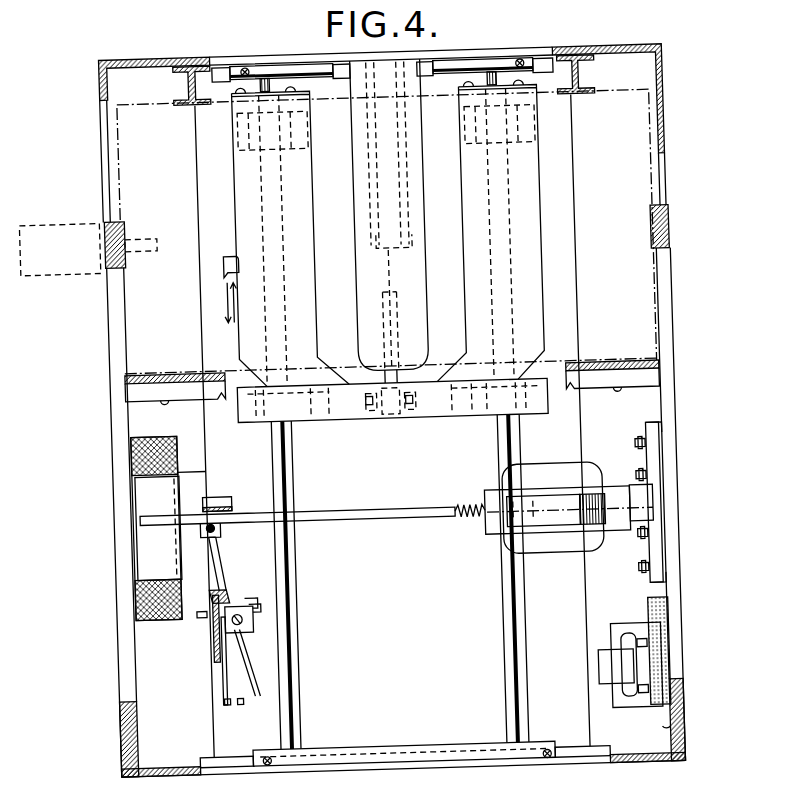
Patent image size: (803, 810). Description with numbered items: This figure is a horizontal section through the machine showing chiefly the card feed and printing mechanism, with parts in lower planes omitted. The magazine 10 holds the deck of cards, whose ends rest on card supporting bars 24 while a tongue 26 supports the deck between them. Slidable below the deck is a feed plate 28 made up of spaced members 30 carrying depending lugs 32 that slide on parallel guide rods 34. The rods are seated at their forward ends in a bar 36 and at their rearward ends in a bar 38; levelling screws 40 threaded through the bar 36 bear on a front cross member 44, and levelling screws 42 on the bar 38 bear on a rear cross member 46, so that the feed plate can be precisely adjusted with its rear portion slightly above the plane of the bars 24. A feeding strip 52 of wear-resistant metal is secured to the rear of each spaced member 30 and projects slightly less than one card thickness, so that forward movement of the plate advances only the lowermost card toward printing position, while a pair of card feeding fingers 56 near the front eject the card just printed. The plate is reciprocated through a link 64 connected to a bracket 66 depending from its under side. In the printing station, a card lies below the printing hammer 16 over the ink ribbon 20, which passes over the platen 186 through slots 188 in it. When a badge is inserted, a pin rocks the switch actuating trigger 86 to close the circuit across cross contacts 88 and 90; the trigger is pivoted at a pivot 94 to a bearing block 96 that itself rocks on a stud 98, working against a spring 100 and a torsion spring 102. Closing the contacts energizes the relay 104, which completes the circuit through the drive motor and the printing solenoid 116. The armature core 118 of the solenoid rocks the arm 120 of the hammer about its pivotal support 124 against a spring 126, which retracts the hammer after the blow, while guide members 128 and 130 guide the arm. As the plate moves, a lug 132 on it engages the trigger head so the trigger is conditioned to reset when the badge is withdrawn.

The magazine 10 is at (106, 88).
The printing hammer 16 is at (146, 540).
The ink ribbon 20 is at (138, 460).
The card supporting bars 24 is at (123, 140).
The tongue 26 is at (426, 149).
The feed plate 28 is at (440, 413).
The spaced members 30 is at (306, 195).
The depending lugs 32 is at (255, 128).
The guide rods 34 is at (281, 467).
The bar 36 is at (430, 749).
The bar 38 is at (475, 62).
The levelling screws 40 is at (260, 761).
The levelling screws 42 is at (257, 66).
The front cross member 44 is at (562, 765).
The rear cross member 46 is at (235, 63).
The feeding strip 52 is at (243, 87).
The card feeding fingers 56 is at (236, 368).
The link 64 is at (398, 293).
The bracket 66 is at (380, 412).
The switch actuating trigger 86 is at (215, 562).
The cross contact 88 is at (216, 702).
The cross contact 90 is at (226, 702).
The pivot 94 is at (247, 621).
The bearing block 96 is at (225, 587).
The stud 98 is at (241, 604).
The spring 100 is at (203, 585).
The torsion spring 102 is at (205, 648).
The relay 104 is at (630, 674).
The printing solenoid 116 is at (541, 470).
The armature core 118 is at (565, 520).
The arm 120 is at (378, 517).
The pivotal support 124 is at (649, 508).
The spring 126 is at (463, 515).
The guide member 128 is at (219, 522).
The guide member 130 is at (219, 493).
The lug 132 is at (235, 253).
The platen 186 is at (198, 464).
The slots 188 is at (129, 432).